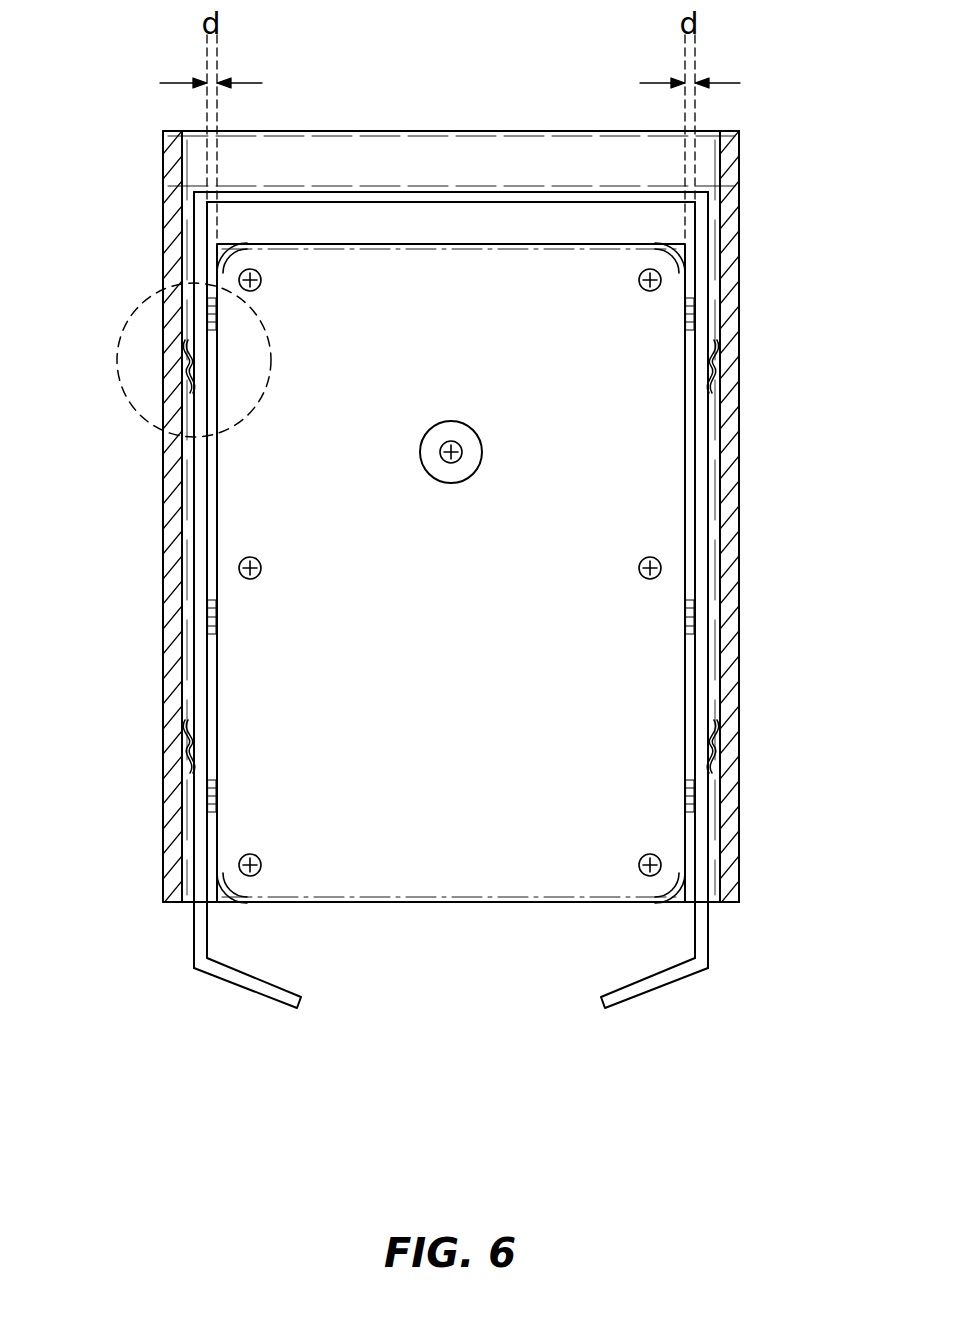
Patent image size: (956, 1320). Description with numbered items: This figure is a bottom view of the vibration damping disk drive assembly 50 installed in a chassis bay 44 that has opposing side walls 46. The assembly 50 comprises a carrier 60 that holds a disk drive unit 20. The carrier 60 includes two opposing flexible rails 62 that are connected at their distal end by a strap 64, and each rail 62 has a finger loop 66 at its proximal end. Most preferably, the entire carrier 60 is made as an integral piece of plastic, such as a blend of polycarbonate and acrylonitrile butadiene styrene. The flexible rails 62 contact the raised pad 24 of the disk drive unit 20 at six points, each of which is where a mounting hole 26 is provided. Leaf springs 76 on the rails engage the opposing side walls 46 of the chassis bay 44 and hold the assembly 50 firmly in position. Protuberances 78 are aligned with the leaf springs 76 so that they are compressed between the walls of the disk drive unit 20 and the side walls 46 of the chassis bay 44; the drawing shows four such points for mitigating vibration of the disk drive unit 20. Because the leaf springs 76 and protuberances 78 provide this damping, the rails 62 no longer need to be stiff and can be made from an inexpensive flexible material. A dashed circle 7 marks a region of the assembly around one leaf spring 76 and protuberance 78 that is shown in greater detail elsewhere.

The detail view region 7 is at (130, 312).
The disk drive unit 20 is at (472, 797).
The raised pad 24 is at (217, 490).
The mounting hole 26 is at (217, 312).
The chassis bay 44 is at (462, 130).
The side walls 46 is at (163, 192).
The vibration damping disk drive assembly 50 is at (308, 1012).
The carrier 60 is at (448, 575).
The flexible rails 62 is at (197, 552).
The strap 64 is at (543, 195).
The finger loops 66 is at (245, 993).
The leaf springs 76 is at (187, 385).
The protuberances 78 is at (217, 368).